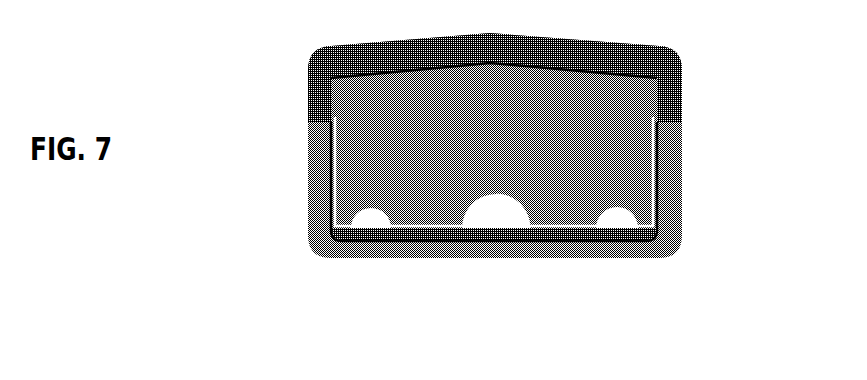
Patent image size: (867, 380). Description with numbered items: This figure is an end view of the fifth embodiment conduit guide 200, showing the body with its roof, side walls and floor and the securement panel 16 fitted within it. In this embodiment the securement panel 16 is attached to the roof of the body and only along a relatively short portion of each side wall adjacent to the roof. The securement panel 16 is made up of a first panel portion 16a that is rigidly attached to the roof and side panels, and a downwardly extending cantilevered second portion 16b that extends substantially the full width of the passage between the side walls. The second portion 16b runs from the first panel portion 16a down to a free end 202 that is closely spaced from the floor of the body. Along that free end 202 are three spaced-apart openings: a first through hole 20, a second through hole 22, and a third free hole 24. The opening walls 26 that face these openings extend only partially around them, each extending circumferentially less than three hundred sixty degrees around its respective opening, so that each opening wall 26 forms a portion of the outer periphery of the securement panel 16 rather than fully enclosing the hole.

The conduit guide 200 is at (722, 78).
The securement panel 16 is at (625, 176).
The first panel portion 16a is at (423, 101).
The second portion 16b is at (423, 176).
The first through hole 20 is at (618, 205).
The second through hole 22 is at (473, 217).
The third free hole 24 is at (362, 218).
The opening walls 26 is at (525, 205).
The free end 202 is at (558, 223).